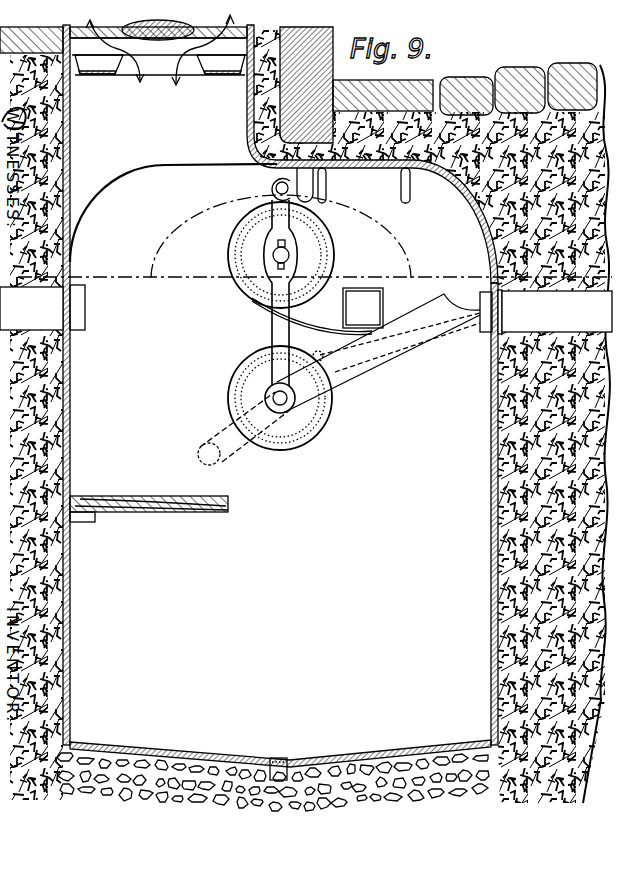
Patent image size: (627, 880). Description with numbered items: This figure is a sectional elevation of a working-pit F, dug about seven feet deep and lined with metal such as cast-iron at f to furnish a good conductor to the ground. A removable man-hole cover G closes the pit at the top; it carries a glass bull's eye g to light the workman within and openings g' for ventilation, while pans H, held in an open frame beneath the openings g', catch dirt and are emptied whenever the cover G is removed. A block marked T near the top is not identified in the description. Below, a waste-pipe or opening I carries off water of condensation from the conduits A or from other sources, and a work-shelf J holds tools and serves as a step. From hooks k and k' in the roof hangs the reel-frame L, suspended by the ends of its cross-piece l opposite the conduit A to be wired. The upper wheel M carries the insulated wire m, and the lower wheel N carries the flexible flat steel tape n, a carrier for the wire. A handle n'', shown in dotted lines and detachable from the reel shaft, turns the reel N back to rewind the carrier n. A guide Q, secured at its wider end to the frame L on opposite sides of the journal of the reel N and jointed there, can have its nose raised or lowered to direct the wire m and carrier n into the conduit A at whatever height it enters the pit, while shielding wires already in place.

The working-pit F is at (284, 396).
The metal lining f is at (69, 366).
The man-hole cover G is at (158, 46).
The glass bull's eye g is at (158, 21).
The ventilation opening g' is at (115, 44).
The pan H is at (159, 65).
The top block T is at (306, 75).
The waste-pipe I is at (311, 525).
The conduit A is at (306, 309).
The upper wheel M is at (229, 264).
The reel-frame L is at (270, 322).
The hook k is at (268, 189).
The cross-piece l is at (305, 185).
The hook k' is at (373, 186).
The insulated wire m is at (332, 328).
The flexible flat tape n is at (314, 349).
The wire and carrier entering guide Q is at (340, 378).
The lower wheel N is at (329, 421).
The handle n'' is at (226, 458).
The work-shelf J is at (158, 494).